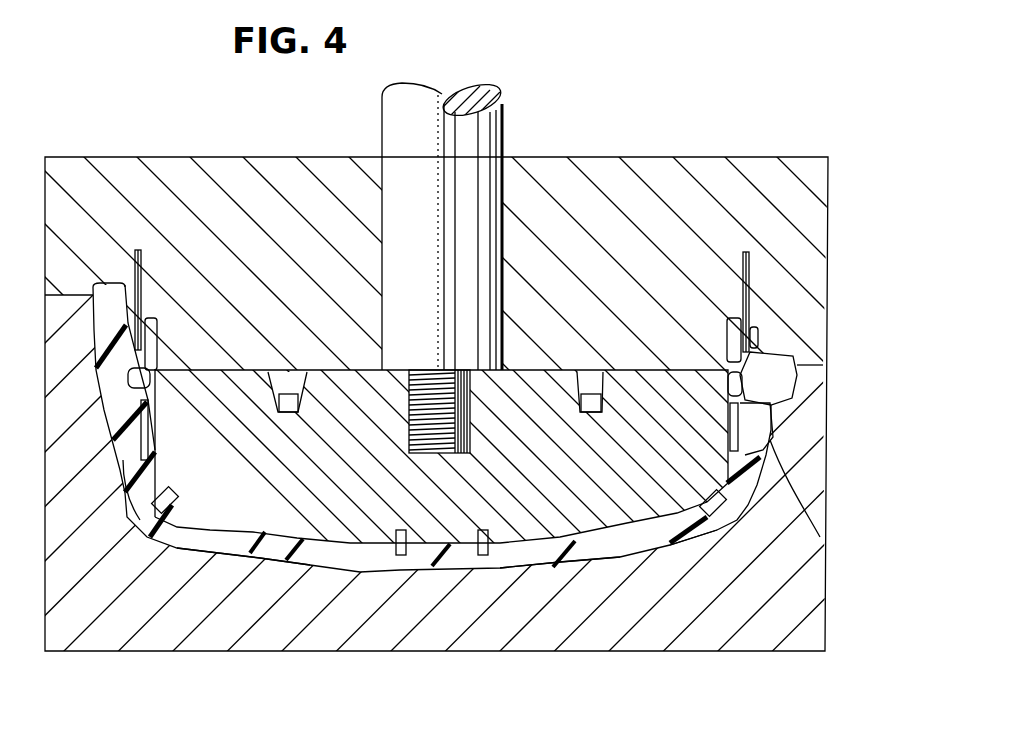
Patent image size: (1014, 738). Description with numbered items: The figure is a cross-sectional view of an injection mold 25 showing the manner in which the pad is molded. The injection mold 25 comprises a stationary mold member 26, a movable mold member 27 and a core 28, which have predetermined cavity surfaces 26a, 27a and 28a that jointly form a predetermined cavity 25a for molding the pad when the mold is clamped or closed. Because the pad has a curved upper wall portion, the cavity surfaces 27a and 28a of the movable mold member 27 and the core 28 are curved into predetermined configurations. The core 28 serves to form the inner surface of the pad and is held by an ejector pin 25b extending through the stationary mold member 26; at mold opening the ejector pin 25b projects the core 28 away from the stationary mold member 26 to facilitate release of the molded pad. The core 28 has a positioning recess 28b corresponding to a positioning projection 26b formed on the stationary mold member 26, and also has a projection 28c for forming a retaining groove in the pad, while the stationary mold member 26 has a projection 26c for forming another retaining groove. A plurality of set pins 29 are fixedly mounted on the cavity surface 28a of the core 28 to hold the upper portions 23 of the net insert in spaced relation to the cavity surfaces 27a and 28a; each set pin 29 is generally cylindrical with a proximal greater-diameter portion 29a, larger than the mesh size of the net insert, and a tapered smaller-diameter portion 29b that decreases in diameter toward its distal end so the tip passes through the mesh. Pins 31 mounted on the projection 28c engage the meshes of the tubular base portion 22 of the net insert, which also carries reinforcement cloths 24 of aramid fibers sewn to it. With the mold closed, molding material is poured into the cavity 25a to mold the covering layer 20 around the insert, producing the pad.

The covering layer 20 is at (225, 562).
The base portion 22 is at (152, 342).
The upper portions 23 is at (292, 569).
The reinforcement cloths 24 is at (123, 460).
The injection mold 25 is at (760, 152).
The cavity 25a is at (560, 572).
The ejector pin 25b is at (384, 128).
The stationary mold member 26 is at (821, 254).
The cavity surface 26a is at (800, 356).
The positioning projection 26b is at (284, 388).
The projection 26c is at (142, 270).
The movable mold member 27 is at (812, 484).
The cavity surface 27a is at (700, 538).
The core 28 is at (655, 425).
The cavity surface 28a is at (238, 540).
The positioning recess 28b is at (300, 392).
The projection 28c is at (128, 418).
The set pins 29 is at (150, 545).
The greater-diameter portion 29a is at (398, 562).
The smaller-diameter portion 29b is at (403, 572).
The pins 31 is at (118, 385).